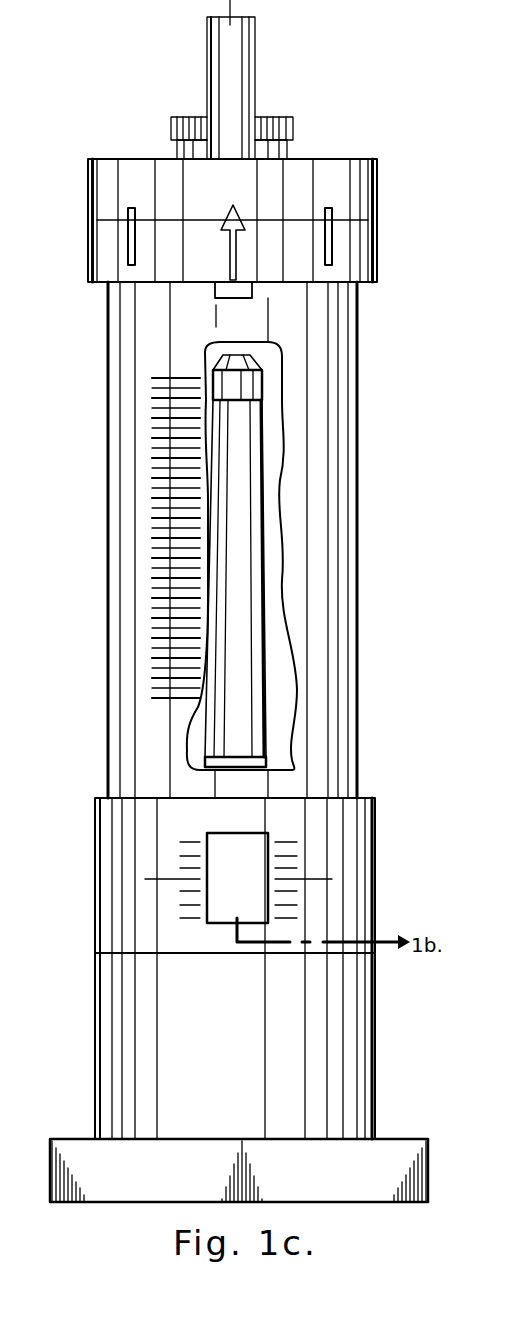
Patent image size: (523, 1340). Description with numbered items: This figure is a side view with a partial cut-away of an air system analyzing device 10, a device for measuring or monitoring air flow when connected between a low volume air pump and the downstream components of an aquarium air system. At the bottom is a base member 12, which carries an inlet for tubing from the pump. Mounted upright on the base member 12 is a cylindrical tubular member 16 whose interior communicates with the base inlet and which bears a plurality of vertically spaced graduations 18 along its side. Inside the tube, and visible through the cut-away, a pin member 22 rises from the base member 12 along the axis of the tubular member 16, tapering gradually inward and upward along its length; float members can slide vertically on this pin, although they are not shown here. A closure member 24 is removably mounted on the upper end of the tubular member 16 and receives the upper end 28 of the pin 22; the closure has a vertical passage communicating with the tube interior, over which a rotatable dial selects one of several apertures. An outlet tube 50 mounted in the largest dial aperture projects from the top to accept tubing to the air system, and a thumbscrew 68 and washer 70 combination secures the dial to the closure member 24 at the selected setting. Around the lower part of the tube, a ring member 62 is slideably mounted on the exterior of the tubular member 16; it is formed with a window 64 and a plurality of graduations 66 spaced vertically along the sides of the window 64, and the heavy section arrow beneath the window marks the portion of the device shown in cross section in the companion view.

The air system analyzing device 10 is at (100, 53).
The base member 12 is at (368, 1042).
The cylindrical tubular member 16 is at (358, 472).
The graduations 18 is at (140, 653).
The pin member 22 is at (267, 598).
The closure member 24 is at (88, 159).
The upper end of the pin 28 is at (263, 385).
The outlet tube 50 is at (254, 18).
The ring member 62 is at (375, 816).
The window 64 is at (216, 920).
The graduations 66 is at (297, 893).
The thumbscrew 68 is at (290, 117).
The washer 70 is at (287, 151).